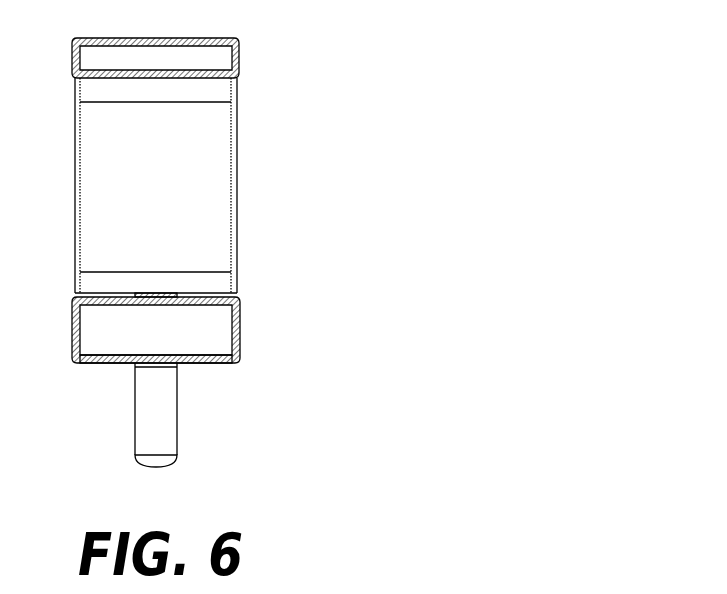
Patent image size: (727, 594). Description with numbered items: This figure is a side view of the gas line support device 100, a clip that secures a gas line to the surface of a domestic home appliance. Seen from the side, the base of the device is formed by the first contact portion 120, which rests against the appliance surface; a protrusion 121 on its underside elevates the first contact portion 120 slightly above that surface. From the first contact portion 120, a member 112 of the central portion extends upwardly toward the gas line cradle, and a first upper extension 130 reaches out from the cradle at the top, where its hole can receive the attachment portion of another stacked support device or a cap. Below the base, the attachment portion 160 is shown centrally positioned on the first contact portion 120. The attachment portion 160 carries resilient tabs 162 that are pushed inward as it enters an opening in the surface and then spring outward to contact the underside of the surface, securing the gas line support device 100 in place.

The gas line support device 100 is at (353, 138).
The member 112 is at (204, 205).
The first contact portion 120 is at (204, 325).
The protrusion 121 is at (240, 363).
The first upper extension 130 is at (204, 61).
The attachment portion 160 is at (150, 464).
The resilient tab 162 is at (158, 418).